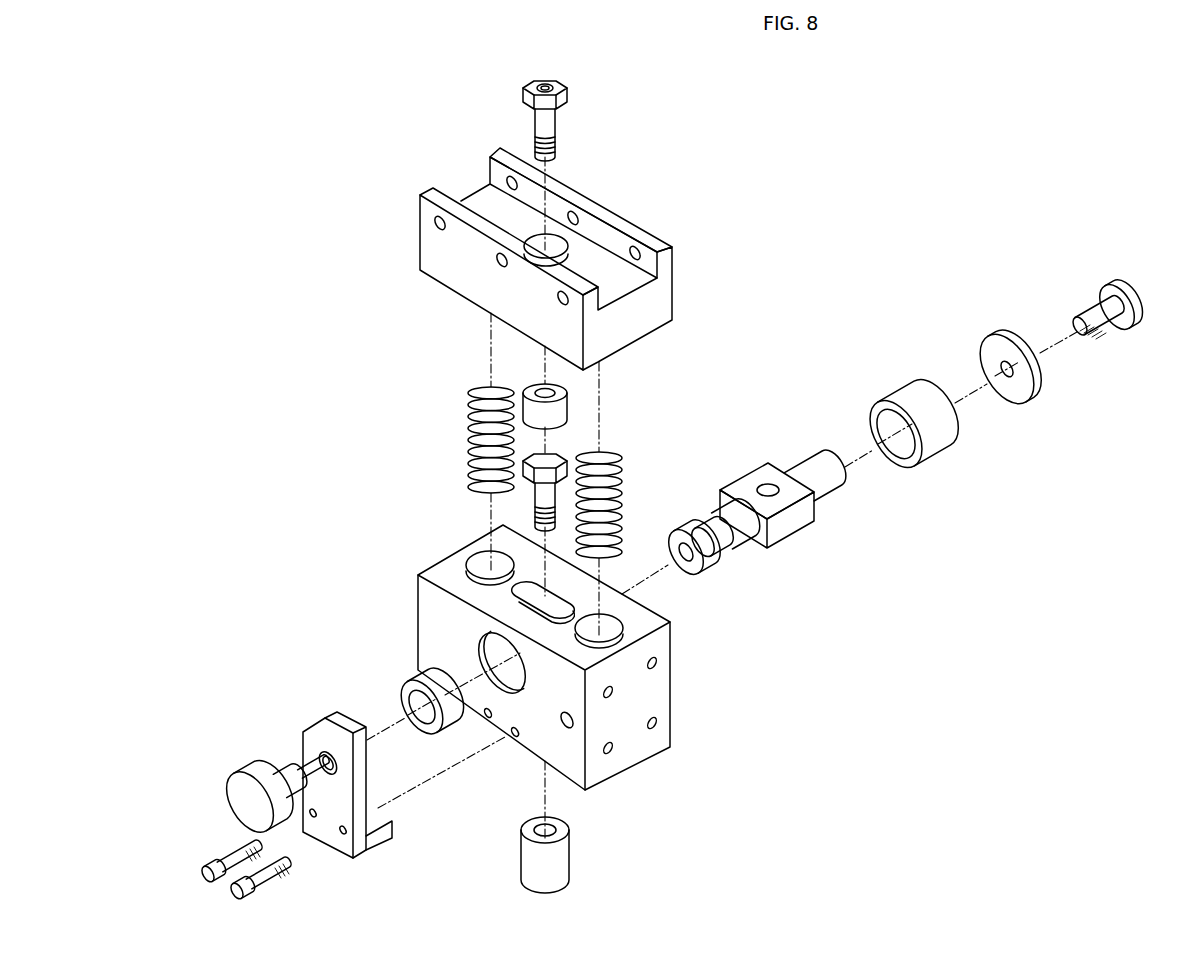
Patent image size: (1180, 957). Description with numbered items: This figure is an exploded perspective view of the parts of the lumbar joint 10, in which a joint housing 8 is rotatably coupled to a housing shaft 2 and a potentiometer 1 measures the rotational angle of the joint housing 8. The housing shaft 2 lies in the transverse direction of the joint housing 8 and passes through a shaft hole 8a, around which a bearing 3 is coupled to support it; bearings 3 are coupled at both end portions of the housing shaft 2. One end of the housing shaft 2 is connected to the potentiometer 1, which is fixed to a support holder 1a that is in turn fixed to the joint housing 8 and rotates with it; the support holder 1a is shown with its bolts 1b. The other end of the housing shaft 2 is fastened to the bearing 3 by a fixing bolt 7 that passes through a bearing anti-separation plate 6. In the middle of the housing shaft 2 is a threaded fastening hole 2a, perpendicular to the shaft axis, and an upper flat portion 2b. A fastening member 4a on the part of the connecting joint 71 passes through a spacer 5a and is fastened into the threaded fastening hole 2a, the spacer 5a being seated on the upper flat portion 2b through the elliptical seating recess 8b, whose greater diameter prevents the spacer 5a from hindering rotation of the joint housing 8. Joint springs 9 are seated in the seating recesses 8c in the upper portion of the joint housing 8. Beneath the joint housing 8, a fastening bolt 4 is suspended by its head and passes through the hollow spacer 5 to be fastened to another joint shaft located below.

The potentiometer 1 is at (232, 788).
The support holder 1a is at (300, 735).
The bolts 1b is at (225, 855).
The housing shaft 2 is at (786, 499).
The threaded fastening hole 2a is at (766, 489).
The upper flat portion 2b is at (827, 505).
The bearing 3 is at (452, 712).
The fastening bolt 4 is at (533, 513).
The fastening member 4a is at (567, 92).
The spacer 5 is at (560, 860).
The spacer 5a is at (528, 383).
The bearing anti-separation plate 6 is at (988, 345).
The fixing bolt 7 is at (1108, 325).
The joint housing 8 is at (537, 685).
The shaft hole 8a is at (481, 652).
The seating recess 8b is at (575, 600).
The seating recess 8c is at (467, 565).
The joint spring 9 is at (470, 424).
The lumbar joint 10 is at (786, 463).
The connecting joint 71 is at (688, 208).